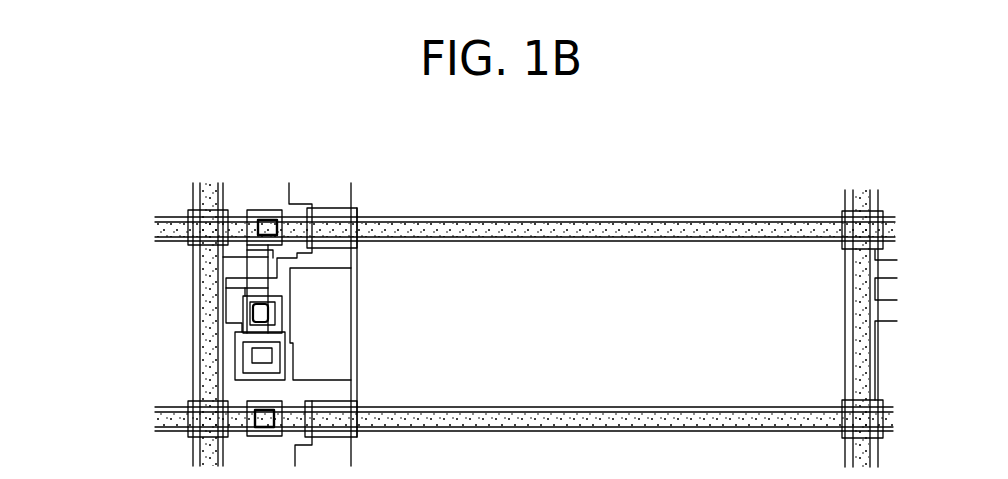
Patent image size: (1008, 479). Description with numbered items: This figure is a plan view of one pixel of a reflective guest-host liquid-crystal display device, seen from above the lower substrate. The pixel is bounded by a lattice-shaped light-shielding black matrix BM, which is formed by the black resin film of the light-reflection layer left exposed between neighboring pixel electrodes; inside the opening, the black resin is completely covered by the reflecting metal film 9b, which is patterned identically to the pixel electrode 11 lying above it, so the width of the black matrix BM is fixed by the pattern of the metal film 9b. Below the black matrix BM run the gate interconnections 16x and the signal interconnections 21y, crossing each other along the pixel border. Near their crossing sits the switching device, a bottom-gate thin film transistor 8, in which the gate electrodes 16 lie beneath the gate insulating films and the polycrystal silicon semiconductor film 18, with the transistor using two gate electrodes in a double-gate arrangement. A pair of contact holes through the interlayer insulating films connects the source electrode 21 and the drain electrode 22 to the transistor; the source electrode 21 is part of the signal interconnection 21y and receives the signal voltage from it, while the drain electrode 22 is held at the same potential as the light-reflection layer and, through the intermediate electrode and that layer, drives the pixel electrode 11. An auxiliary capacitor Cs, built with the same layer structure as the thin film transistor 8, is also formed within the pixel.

The signal interconnection 21y is at (170, 217).
The gate interconnection 16x is at (222, 196).
The source electrode 21 is at (265, 220).
The black matrix BM is at (526, 232).
The semiconductor film 18 is at (300, 256).
The gate electrodes 16 is at (283, 275).
The auxiliary capacitor Cs is at (338, 323).
The thin film transistor 8 is at (218, 288).
The drain electrode 22 is at (253, 355).
The pixel electrode 11 is at (631, 333).
The metal film 9b is at (886, 325).